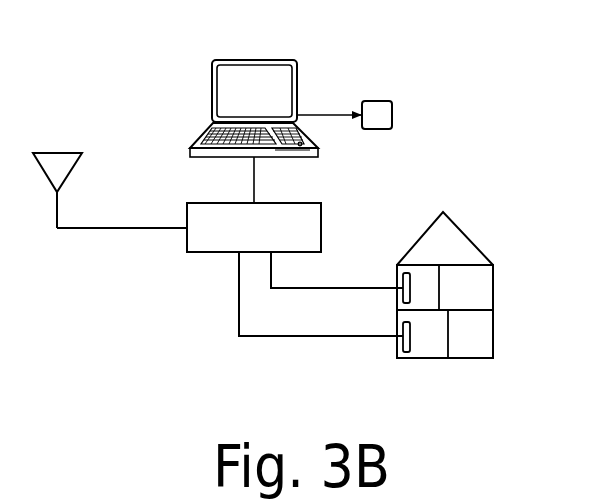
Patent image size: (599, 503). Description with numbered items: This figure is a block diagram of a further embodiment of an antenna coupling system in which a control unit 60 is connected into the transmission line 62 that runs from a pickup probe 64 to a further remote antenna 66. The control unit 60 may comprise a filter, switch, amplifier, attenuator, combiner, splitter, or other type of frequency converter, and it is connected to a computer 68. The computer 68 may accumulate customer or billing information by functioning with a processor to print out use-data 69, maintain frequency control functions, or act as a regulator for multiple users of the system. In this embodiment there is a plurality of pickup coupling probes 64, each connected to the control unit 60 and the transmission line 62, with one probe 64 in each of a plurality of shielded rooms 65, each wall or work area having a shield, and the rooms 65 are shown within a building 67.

The control unit 60 is at (186, 243).
The transmission line 62 is at (102, 227).
The pickup coupling probe 64 is at (400, 280).
The shielded room 65 is at (487, 288).
The further remote antenna 66 is at (60, 152).
The building 67 is at (478, 226).
The computer 68 is at (253, 60).
The use-data 69 is at (377, 101).